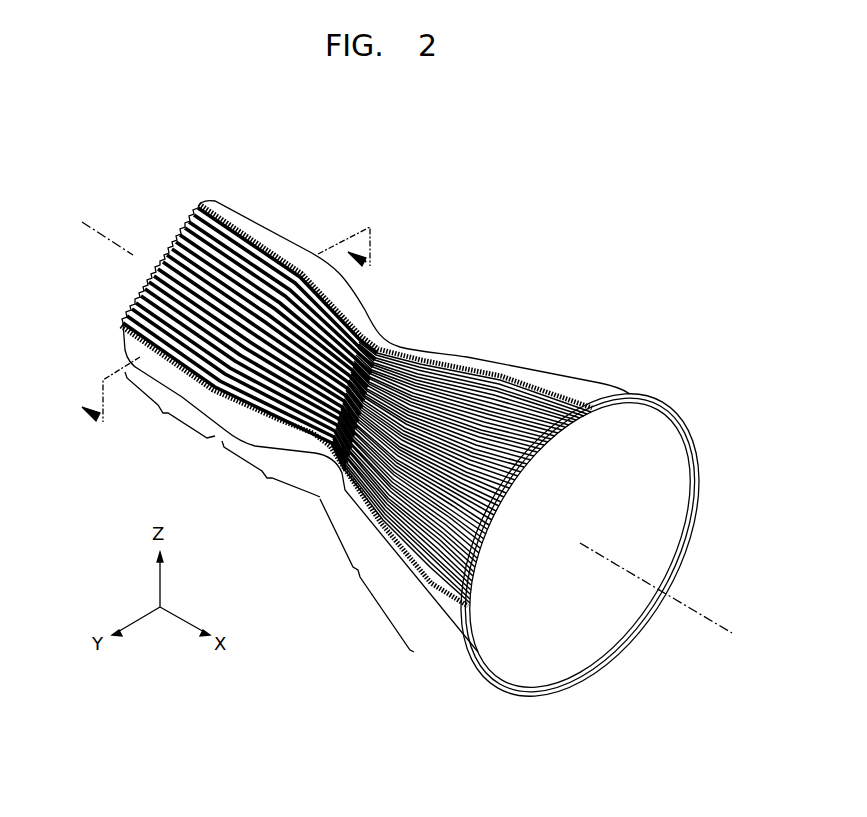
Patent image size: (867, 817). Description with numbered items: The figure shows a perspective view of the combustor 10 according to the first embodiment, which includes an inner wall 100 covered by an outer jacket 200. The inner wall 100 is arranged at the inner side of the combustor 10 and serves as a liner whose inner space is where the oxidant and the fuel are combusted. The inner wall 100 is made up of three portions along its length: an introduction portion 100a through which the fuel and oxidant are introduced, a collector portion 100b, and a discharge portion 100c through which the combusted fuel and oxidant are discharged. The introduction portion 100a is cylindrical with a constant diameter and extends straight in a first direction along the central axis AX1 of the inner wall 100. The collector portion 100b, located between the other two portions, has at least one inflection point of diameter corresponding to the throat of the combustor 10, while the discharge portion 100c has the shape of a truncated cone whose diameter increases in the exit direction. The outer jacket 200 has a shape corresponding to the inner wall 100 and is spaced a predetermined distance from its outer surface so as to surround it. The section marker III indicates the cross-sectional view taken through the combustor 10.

The combustor 10 is at (667, 196).
The inner wall 100 is at (672, 463).
The introduction portion 100a is at (170, 409).
The collector portion 100b is at (271, 472).
The discharge portion 100c is at (357, 575).
The outer jacket 200 is at (507, 358).
The central axis AX1 is at (93, 231).
The section line III- III is at (228, 324).